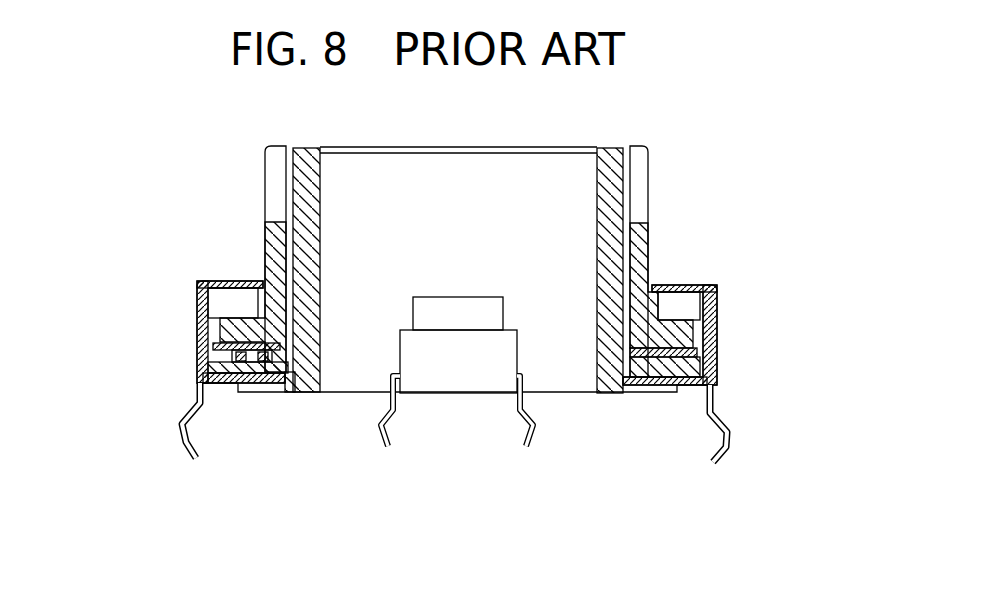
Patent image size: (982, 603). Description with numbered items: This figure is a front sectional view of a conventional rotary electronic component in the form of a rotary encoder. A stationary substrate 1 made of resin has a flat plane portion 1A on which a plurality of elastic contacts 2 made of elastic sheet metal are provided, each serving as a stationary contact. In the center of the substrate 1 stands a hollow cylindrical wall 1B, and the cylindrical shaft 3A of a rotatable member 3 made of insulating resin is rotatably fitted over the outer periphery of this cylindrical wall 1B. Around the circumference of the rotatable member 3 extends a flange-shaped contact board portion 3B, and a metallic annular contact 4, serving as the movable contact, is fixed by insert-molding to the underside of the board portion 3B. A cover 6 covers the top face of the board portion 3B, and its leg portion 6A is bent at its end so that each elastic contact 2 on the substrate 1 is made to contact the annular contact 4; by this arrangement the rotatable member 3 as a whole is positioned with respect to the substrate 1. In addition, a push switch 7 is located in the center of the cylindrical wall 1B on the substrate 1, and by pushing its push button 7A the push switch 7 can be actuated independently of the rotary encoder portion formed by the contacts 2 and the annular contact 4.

The stationary substrate 1 is at (452, 355).
The flat plane portion 1A is at (280, 360).
The hollow cylindrical wall 1B is at (313, 303).
The elastic contact 2 is at (249, 431).
The rotatable member 3 is at (396, 302).
The cylindrical shaft 3A is at (277, 208).
The contact board portion 3B is at (225, 317).
The annular contact 4 is at (218, 345).
The cover 6 is at (699, 399).
The leg portion 6A is at (683, 383).
The push switch 7 is at (457, 405).
The push button 7A is at (467, 318).